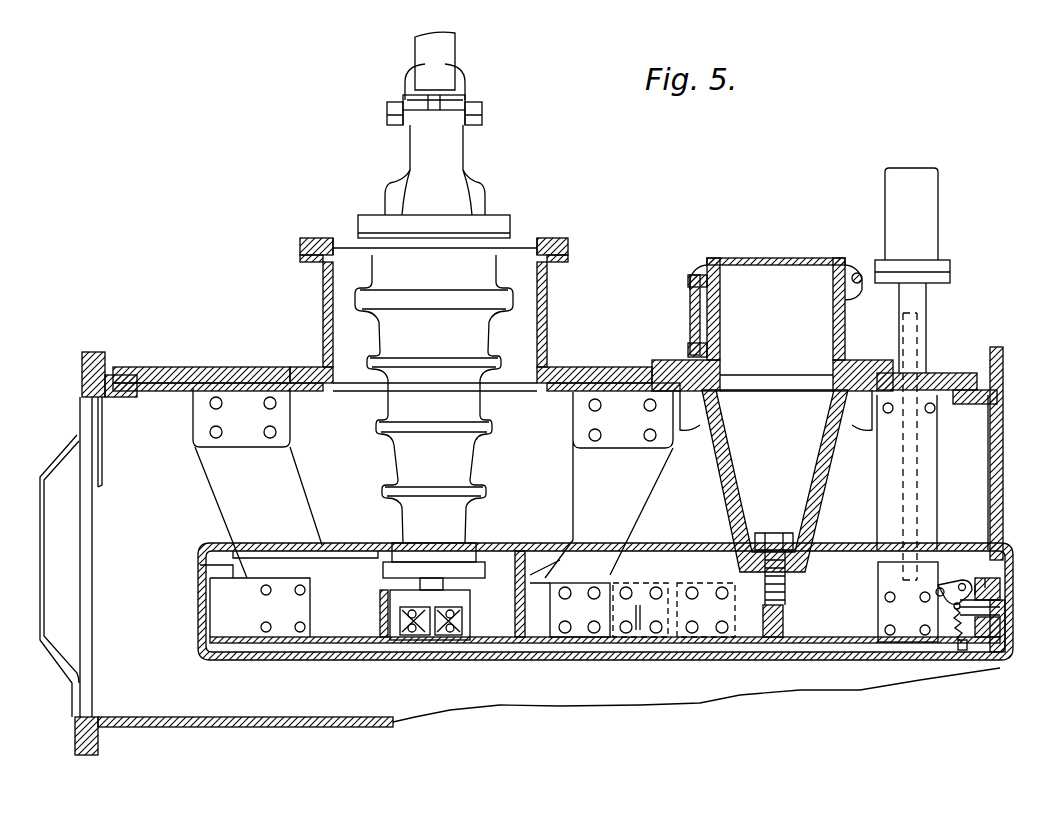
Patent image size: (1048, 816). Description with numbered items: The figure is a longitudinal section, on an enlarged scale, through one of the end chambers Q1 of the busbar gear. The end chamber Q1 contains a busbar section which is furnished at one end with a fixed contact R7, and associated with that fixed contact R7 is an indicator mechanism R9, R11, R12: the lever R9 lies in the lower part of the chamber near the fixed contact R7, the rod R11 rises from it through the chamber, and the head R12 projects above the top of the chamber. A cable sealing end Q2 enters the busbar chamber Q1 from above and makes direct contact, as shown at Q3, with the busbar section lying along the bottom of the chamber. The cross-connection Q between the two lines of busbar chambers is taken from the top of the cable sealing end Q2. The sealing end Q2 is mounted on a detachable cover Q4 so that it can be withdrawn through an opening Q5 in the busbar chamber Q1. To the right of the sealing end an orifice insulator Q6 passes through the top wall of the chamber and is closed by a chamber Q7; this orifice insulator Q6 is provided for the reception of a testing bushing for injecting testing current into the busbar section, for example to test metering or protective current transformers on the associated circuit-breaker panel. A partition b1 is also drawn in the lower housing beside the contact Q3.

The cross-connection Q is at (440, 45).
The end chamber Q1 is at (125, 445).
The cable sealing end Q2 is at (447, 152).
The direct contact Q3 is at (437, 637).
The detachable cover Q4 is at (530, 250).
The opening Q5 is at (527, 338).
The orifice insulator Q6 is at (727, 460).
The chamber Q7 is at (838, 300).
The fixed contact R7 is at (1010, 645).
The indicator mechanism R9 is at (953, 585).
The indicator mechanism R11 is at (905, 478).
The indicator mechanism R12 is at (915, 195).
The housing partition b1 is at (390, 640).